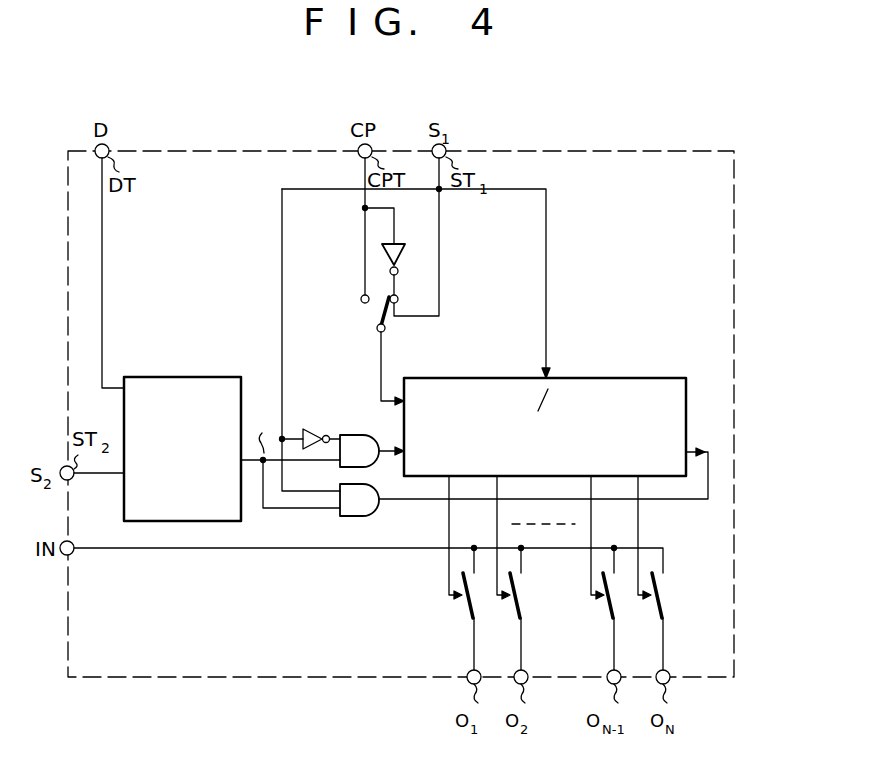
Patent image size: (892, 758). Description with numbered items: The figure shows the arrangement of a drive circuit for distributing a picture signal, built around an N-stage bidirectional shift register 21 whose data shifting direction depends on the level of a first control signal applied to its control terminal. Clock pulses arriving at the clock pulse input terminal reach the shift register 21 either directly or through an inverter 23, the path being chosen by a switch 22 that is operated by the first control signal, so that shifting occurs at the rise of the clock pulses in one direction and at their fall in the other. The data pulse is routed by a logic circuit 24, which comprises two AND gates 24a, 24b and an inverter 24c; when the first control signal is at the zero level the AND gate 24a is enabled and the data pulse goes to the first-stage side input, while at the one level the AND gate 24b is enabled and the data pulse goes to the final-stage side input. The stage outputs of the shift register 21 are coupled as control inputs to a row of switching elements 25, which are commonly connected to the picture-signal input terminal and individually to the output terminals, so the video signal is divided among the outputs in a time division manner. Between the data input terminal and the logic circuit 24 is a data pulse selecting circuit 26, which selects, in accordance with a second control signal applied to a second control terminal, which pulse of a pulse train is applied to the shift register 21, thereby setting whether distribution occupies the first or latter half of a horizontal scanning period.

The N-stage bidirectional shift register 21 is at (471, 376).
The switch 22 is at (361, 306).
The inverter 23 is at (405, 250).
The logic circuit 24 is at (322, 485).
The AND gate 24a is at (354, 432).
The AND gate 24b is at (358, 516).
The inverter 24c is at (310, 428).
The switching elements 25 is at (460, 604).
The data pulse selecting circuit 26 is at (164, 376).